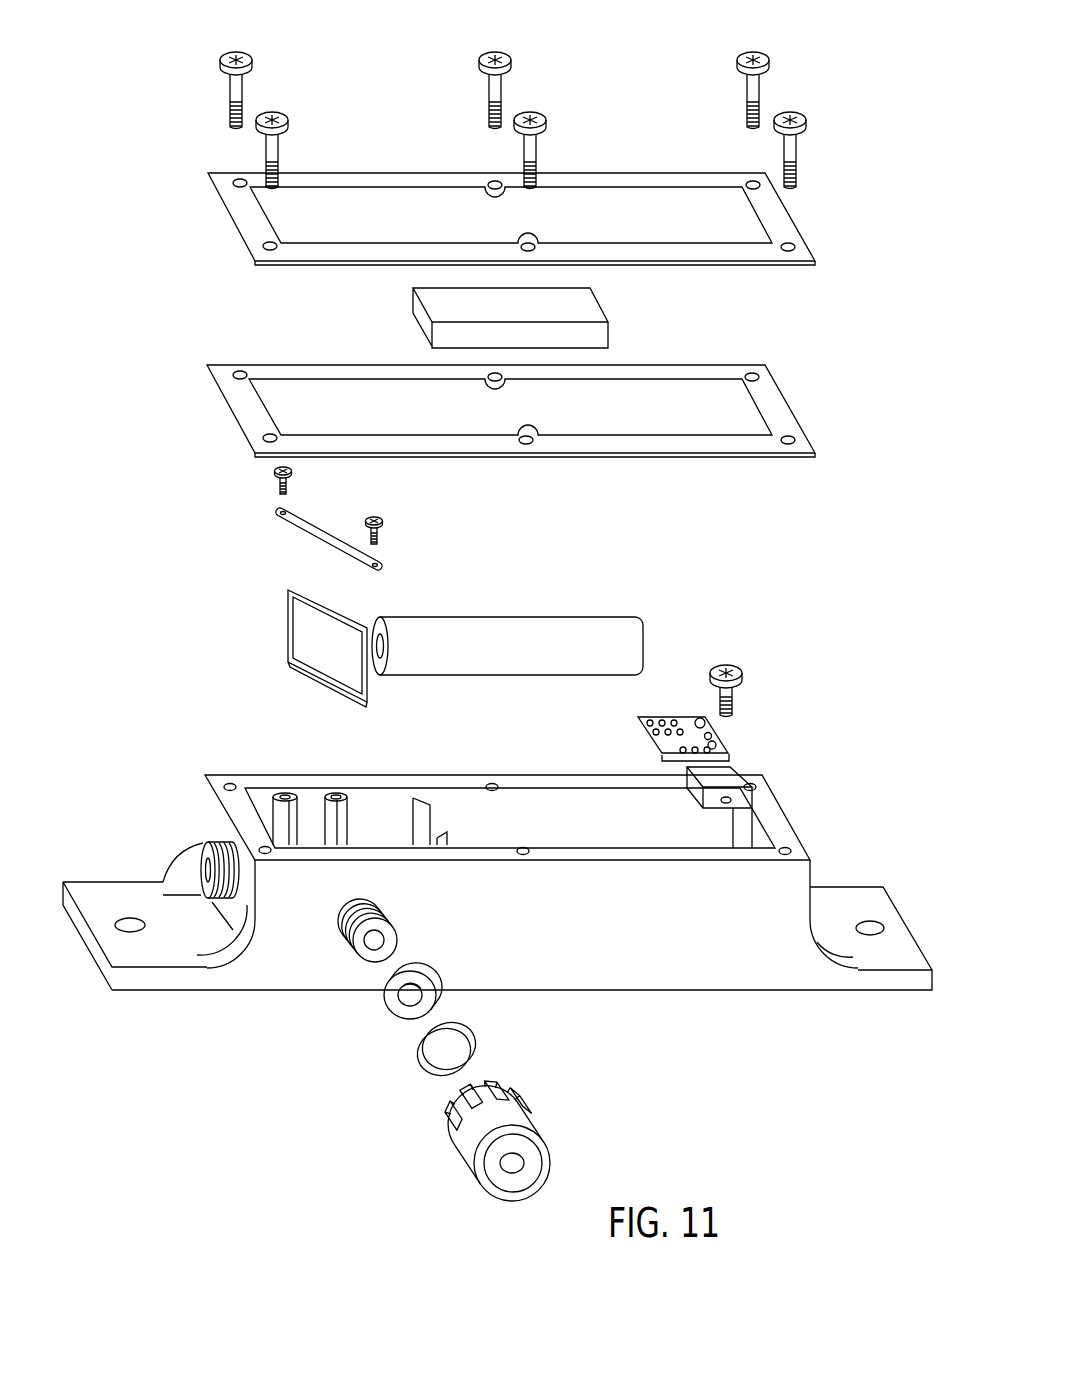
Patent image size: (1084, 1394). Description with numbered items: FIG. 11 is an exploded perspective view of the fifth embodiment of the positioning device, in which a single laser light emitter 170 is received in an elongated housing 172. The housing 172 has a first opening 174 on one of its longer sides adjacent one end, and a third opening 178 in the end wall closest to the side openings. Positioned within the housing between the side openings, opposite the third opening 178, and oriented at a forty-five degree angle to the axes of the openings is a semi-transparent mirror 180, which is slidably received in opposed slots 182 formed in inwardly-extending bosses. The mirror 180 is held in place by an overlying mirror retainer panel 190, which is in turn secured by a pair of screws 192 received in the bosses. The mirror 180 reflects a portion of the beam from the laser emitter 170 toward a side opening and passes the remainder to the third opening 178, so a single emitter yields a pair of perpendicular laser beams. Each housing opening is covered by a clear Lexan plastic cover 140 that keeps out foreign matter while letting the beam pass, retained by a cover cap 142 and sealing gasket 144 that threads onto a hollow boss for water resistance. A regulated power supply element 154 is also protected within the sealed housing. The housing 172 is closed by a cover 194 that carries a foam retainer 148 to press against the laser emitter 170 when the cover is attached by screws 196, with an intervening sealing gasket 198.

The cover 194 is at (650, 180).
The screws 196 is at (800, 152).
The foam rubber retainer 148 is at (592, 300).
The sealing gasket 198 is at (270, 365).
The screws 192 is at (294, 472).
The mirror retainer panel 190 is at (300, 532).
The semi-transparent mirror 180 is at (300, 628).
The laser light emitter 170 is at (533, 627).
The regulated power supply element 154 is at (640, 735).
The slots 182 is at (287, 797).
The third opening 178 is at (207, 858).
The first opening 174 is at (400, 938).
The sealing gasket 144 is at (388, 1000).
The cover 140 is at (420, 1060).
The cover cap 142 is at (533, 1103).
The housing 172 is at (668, 990).